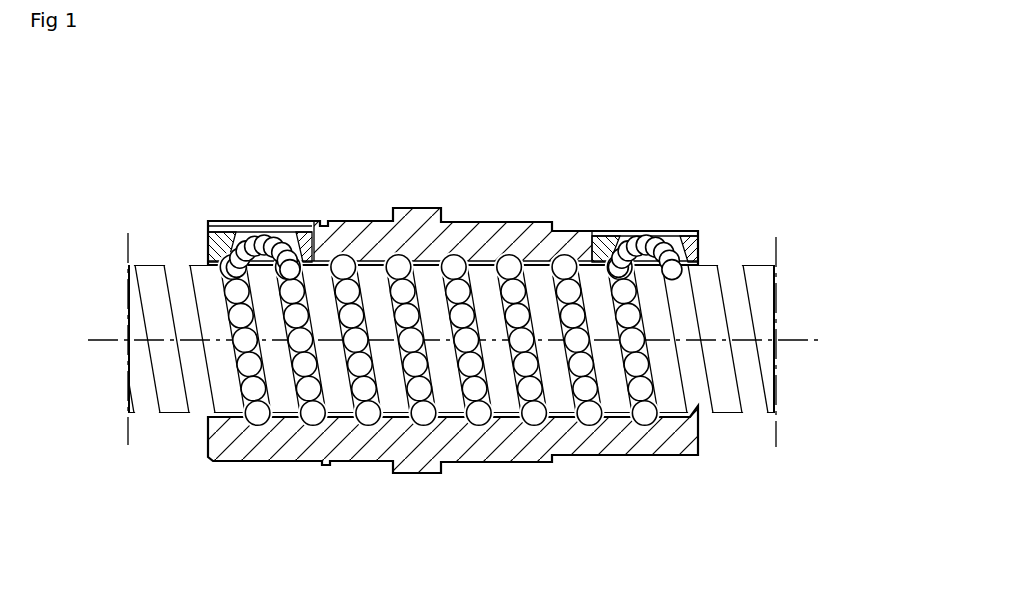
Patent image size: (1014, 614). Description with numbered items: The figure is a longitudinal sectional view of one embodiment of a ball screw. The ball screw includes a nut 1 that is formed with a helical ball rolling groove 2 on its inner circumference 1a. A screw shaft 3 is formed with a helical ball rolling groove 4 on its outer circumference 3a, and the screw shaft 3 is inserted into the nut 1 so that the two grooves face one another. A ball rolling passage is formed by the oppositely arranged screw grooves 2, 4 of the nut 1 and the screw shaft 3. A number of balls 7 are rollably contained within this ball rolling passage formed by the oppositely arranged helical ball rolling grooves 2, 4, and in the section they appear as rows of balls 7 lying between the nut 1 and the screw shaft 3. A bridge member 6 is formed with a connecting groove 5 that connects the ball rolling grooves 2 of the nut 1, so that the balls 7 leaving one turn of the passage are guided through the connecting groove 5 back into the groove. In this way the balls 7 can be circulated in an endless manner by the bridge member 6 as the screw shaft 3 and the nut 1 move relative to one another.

The nut 1 is at (488, 221).
The inner circumference 1a is at (367, 273).
The helical ball rolling groove 2 is at (532, 412).
The screw shaft 3 is at (757, 268).
The outer circumference 3a is at (726, 400).
The helical ball rolling groove 4 is at (753, 392).
The connecting groove 5 is at (263, 241).
The bridge member 6 is at (225, 237).
The balls 7 is at (638, 365).